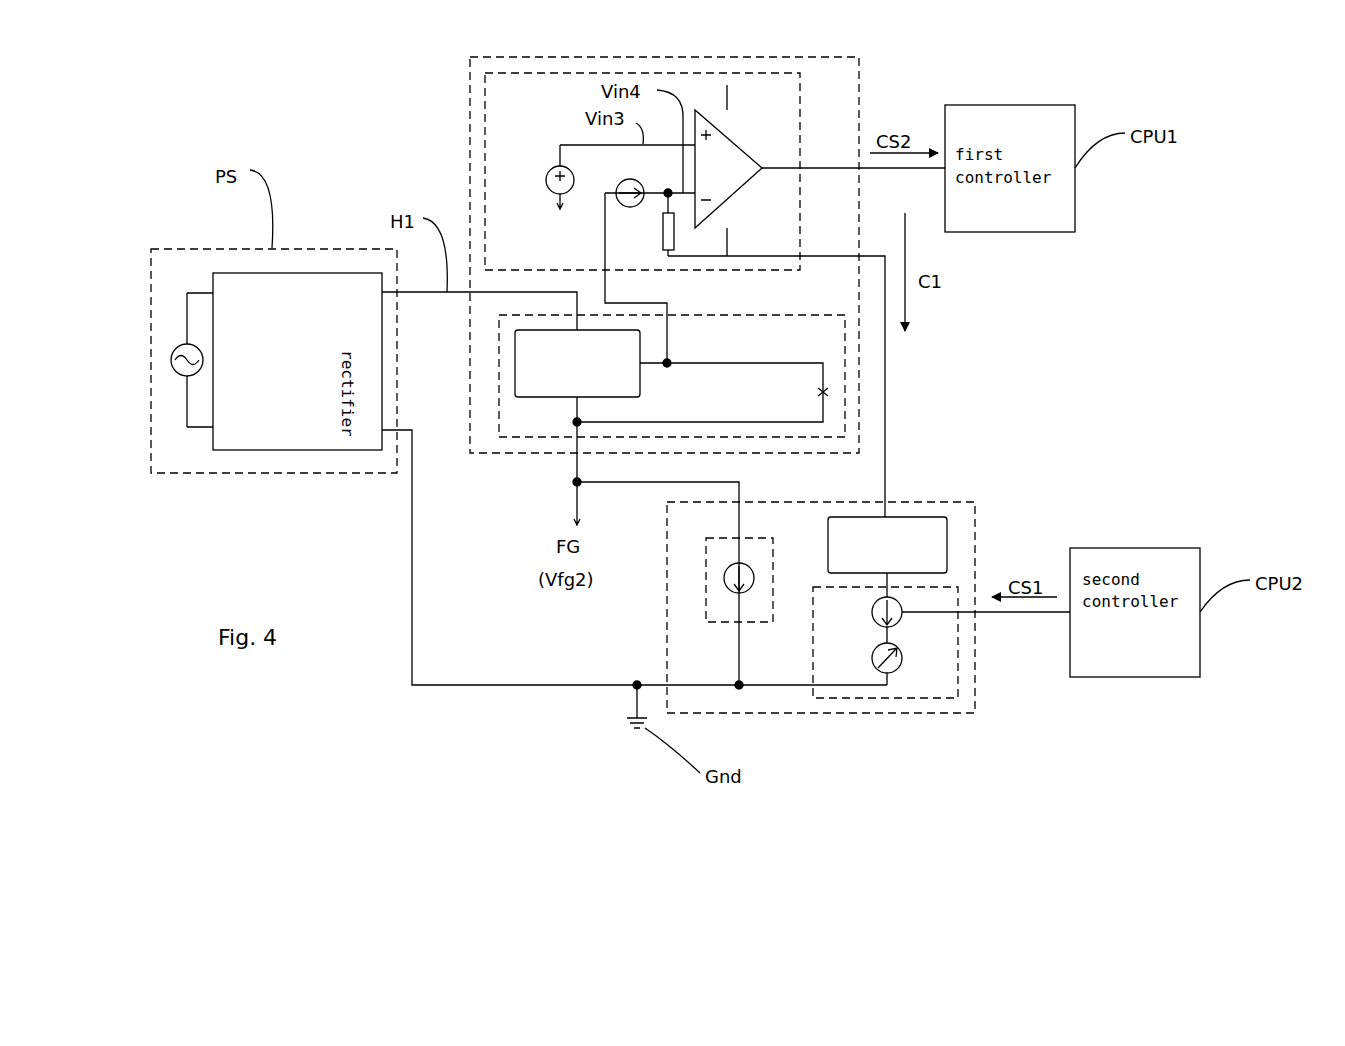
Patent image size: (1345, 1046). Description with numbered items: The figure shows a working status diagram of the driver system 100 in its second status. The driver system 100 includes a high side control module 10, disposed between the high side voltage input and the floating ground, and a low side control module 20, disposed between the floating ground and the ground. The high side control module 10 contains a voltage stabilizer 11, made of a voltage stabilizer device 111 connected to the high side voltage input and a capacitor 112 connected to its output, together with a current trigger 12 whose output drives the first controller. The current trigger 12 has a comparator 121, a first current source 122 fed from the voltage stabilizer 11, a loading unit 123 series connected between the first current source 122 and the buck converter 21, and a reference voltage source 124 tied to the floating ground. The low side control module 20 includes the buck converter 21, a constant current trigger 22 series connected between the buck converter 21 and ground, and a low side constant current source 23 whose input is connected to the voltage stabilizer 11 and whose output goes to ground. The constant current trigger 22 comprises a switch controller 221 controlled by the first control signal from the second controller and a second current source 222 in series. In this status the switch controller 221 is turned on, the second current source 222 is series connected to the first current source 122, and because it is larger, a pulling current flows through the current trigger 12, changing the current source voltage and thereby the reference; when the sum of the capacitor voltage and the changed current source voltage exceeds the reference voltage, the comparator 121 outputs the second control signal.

The driver system 100 is at (1200, 33).
The high side control module 10 is at (470, 160).
The voltage stabilizer 11 is at (546, 437).
The voltage stabilizer device 111 is at (515, 363).
The capacitor 112 is at (823, 392).
The current trigger 12 is at (485, 118).
The comparator 121 is at (743, 150).
The first current source 122 is at (627, 179).
The loading unit 123 is at (676, 222).
The reference voltage source 124 is at (558, 150).
The low side control module 20 is at (930, 502).
The buck converter 21 is at (947, 548).
The constant current trigger 22 is at (885, 677).
The switch controller 221 is at (873, 605).
The second current source 222 is at (899, 669).
The low side constant current source 23 is at (706, 590).